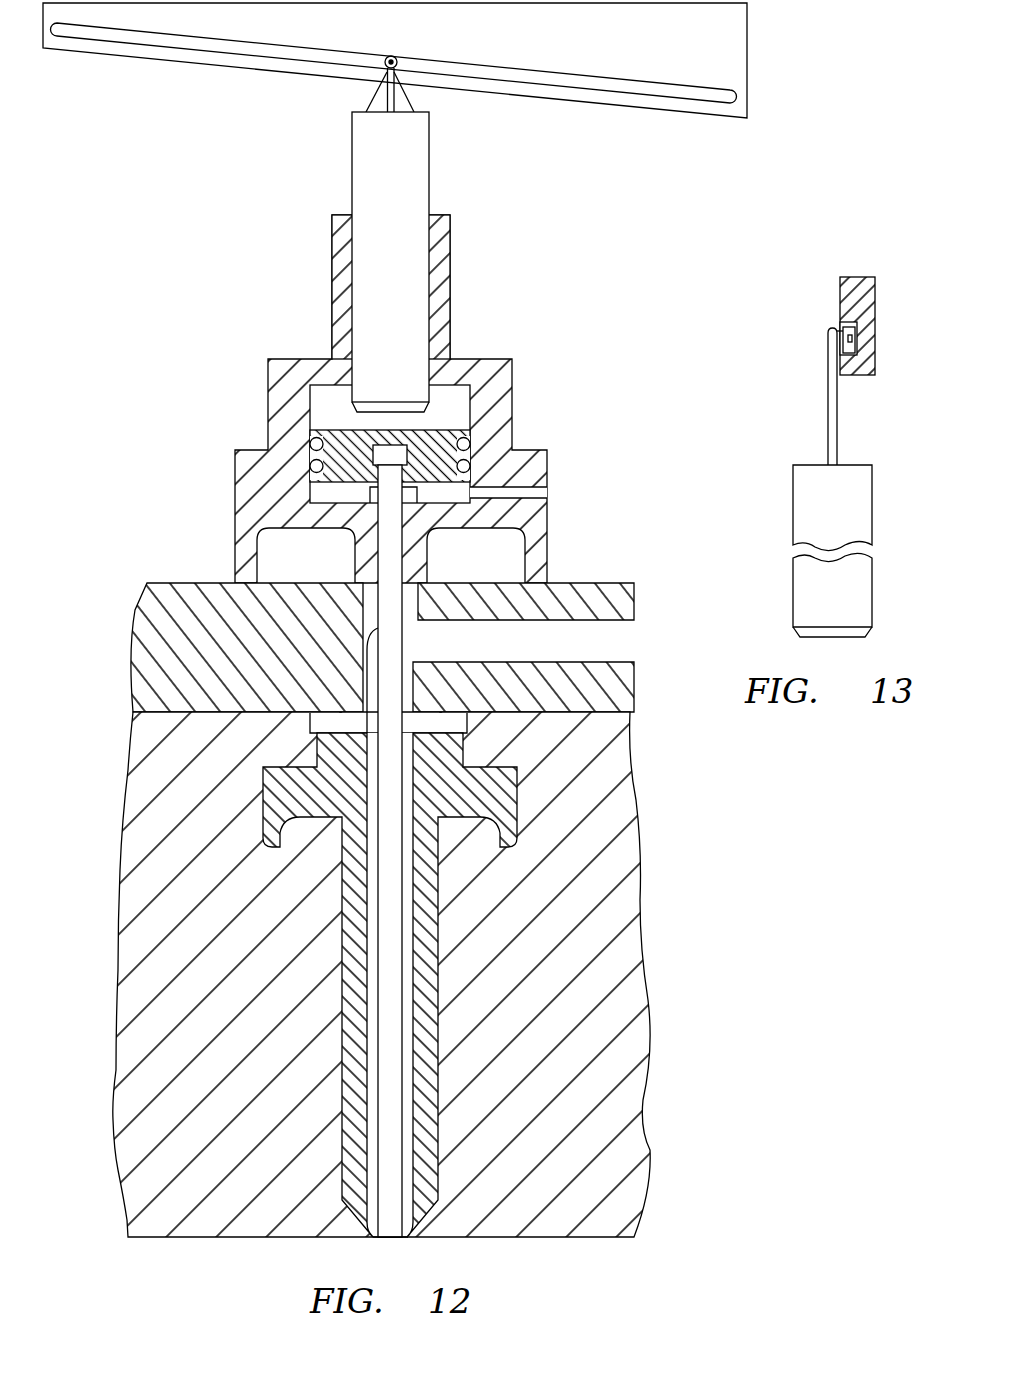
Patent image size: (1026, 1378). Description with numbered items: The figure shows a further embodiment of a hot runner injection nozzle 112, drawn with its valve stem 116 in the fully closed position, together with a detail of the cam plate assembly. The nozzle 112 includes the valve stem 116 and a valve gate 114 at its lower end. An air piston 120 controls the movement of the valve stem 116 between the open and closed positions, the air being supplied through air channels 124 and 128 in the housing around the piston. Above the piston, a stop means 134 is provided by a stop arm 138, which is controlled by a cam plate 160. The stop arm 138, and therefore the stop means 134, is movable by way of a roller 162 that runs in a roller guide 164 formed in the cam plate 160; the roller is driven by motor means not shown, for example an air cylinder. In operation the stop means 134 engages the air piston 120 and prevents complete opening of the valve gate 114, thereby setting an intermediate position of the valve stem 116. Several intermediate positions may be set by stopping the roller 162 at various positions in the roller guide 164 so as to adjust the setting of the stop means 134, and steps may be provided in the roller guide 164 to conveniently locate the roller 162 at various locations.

In FIG. 12, the cam plate 160 is at (710, 38).
In FIG. 12, the roller 162 is at (405, 58).
In FIG. 13, the roller 162 is at (857, 348).
In FIG. 12, the roller guide 164 is at (233, 47).
In FIG. 13, the roller guide 164 is at (842, 323).
In FIG. 12, the stop arm 138 is at (373, 265).
In FIG. 12, the air channel 124 is at (320, 378).
In FIG. 12, the stop means 134 is at (427, 408).
In FIG. 12, the air piston 120 is at (323, 456).
In FIG. 12, the air channel 128 is at (545, 491).
In FIG. 12, the hot runner injection nozzle 112 is at (425, 927).
In FIG. 12, the valve stem 116 is at (392, 1047).
In FIG. 12, the valve gate 114 is at (408, 1237).